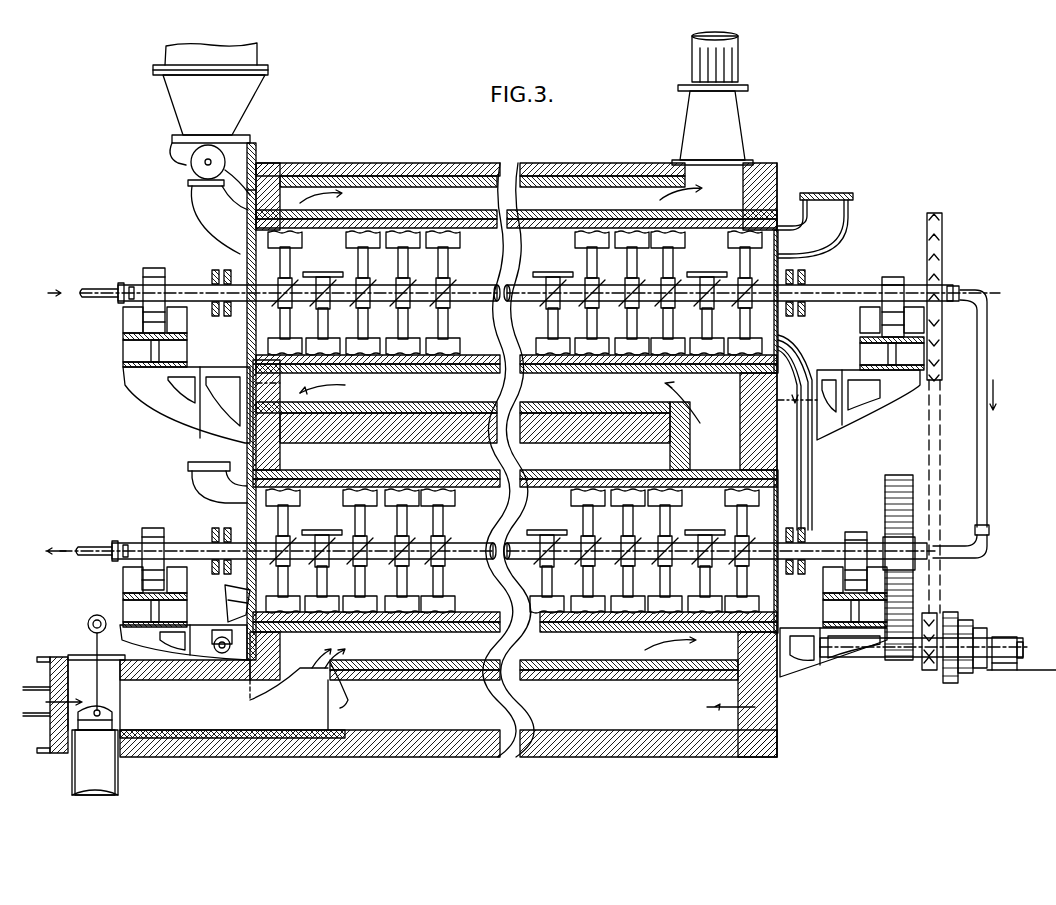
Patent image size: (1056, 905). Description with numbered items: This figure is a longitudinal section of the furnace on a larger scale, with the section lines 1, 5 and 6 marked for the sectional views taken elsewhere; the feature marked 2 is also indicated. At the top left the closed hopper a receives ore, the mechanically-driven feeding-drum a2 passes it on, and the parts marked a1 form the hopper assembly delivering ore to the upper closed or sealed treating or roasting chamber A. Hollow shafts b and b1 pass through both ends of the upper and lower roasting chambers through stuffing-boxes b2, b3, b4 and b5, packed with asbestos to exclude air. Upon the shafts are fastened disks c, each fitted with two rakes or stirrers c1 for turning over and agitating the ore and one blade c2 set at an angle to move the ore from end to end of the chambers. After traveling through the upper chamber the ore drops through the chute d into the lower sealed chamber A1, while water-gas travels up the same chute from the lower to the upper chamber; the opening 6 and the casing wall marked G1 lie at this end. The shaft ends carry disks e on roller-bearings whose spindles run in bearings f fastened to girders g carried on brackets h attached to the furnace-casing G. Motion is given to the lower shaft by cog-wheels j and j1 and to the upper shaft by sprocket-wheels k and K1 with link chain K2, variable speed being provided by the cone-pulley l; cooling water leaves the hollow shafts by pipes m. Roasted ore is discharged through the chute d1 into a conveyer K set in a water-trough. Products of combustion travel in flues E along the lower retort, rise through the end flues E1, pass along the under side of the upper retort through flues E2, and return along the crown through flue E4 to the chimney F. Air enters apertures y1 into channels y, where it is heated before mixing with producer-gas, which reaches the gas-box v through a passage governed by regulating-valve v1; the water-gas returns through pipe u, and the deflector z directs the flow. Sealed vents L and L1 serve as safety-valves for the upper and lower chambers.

The section line 1 is at (308, 162).
The second section of apparatus 2 is at (714, 175).
The hopper a1 is at (258, 52).
The mechanically-driven feeding-drum a2 is at (197, 166).
The closed hopper a is at (207, 210).
The section line 5 is at (247, 190).
The outlet chimney F is at (744, 122).
The flue E4 is at (523, 200).
The sealed vent L is at (844, 228).
The hollow shaft b is at (462, 289).
The hollow shaft b1 is at (482, 545).
The upper closed treating or roasting chamber A is at (752, 270).
The lower closed treating or roasting chamber A1 is at (719, 528).
The disk c is at (538, 304).
The rake or stirrer c1 is at (440, 252).
The blade c2 is at (535, 420).
The stuffing-box b2 is at (218, 285).
The stuffing-box b3 is at (804, 280).
The stuffing-box b4 is at (797, 538).
The stuffing-box b5 is at (217, 542).
The disk e is at (147, 273).
The bearing f is at (122, 322).
The girder g is at (186, 352).
The bracket h is at (182, 408).
The sprocket-wheel K1 is at (937, 348).
The link chain K2 is at (936, 428).
The sprocket-wheel k is at (931, 670).
The pipe m is at (998, 418).
The cog-wheel j is at (905, 507).
The cog-wheel j1 is at (900, 662).
The cone-pulley l is at (958, 620).
The chute d is at (813, 422).
The section line 6 is at (246, 383).
The casing wall G1 is at (247, 393).
The sealed vent L1 is at (217, 475).
The flue E2 is at (456, 389).
The end flue E1 is at (706, 454).
The flue E is at (419, 645).
The channel or duct y is at (480, 712).
The aperture y1 is at (799, 707).
The furnace-casing G is at (779, 746).
The deflector z is at (299, 678).
The pipe u is at (42, 705).
The gas-box v is at (96, 725).
The regulating-valve v1 is at (105, 722).
The chute d1 is at (232, 603).
The conveyer K is at (216, 639).